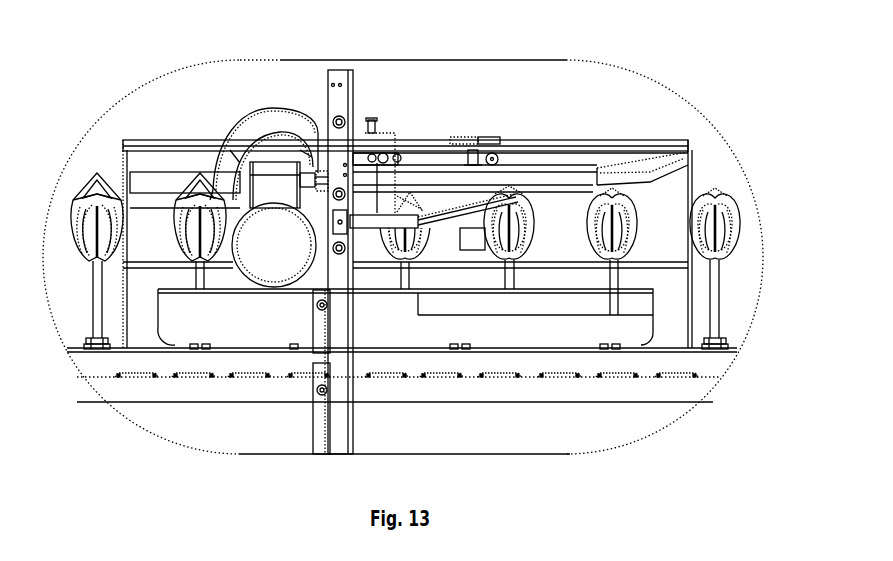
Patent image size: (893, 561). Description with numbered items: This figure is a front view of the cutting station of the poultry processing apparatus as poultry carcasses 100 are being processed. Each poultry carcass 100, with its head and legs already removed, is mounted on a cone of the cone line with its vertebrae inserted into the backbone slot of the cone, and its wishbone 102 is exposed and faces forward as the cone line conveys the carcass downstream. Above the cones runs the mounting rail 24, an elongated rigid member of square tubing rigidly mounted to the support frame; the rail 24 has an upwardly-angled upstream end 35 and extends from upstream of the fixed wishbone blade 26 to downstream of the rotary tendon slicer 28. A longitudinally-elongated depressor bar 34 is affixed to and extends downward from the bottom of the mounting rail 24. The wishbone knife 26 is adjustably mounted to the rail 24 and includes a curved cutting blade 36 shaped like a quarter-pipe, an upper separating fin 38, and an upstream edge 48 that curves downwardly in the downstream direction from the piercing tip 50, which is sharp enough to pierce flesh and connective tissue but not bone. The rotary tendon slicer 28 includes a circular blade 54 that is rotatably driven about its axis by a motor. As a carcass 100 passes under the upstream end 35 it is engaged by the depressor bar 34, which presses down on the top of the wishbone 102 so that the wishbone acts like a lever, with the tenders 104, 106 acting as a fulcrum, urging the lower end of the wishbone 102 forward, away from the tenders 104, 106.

The mounting rail 24 is at (575, 170).
The fixed wishbone blade 26 is at (442, 198).
The rotary tendon slicer 28 is at (254, 283).
The depressor bar 34 is at (557, 190).
The upstream end 35 is at (622, 170).
The cutting blade 36 is at (433, 207).
The upper separating fin 38 is at (359, 192).
The upstream edge 48 is at (457, 208).
The piercing tip 50 is at (519, 195).
The circular blade 54 is at (273, 156).
The poultry carcass 100 is at (628, 192).
The wishbone 102 is at (98, 170).
The tender 104 is at (610, 194).
The tender 106 is at (623, 194).